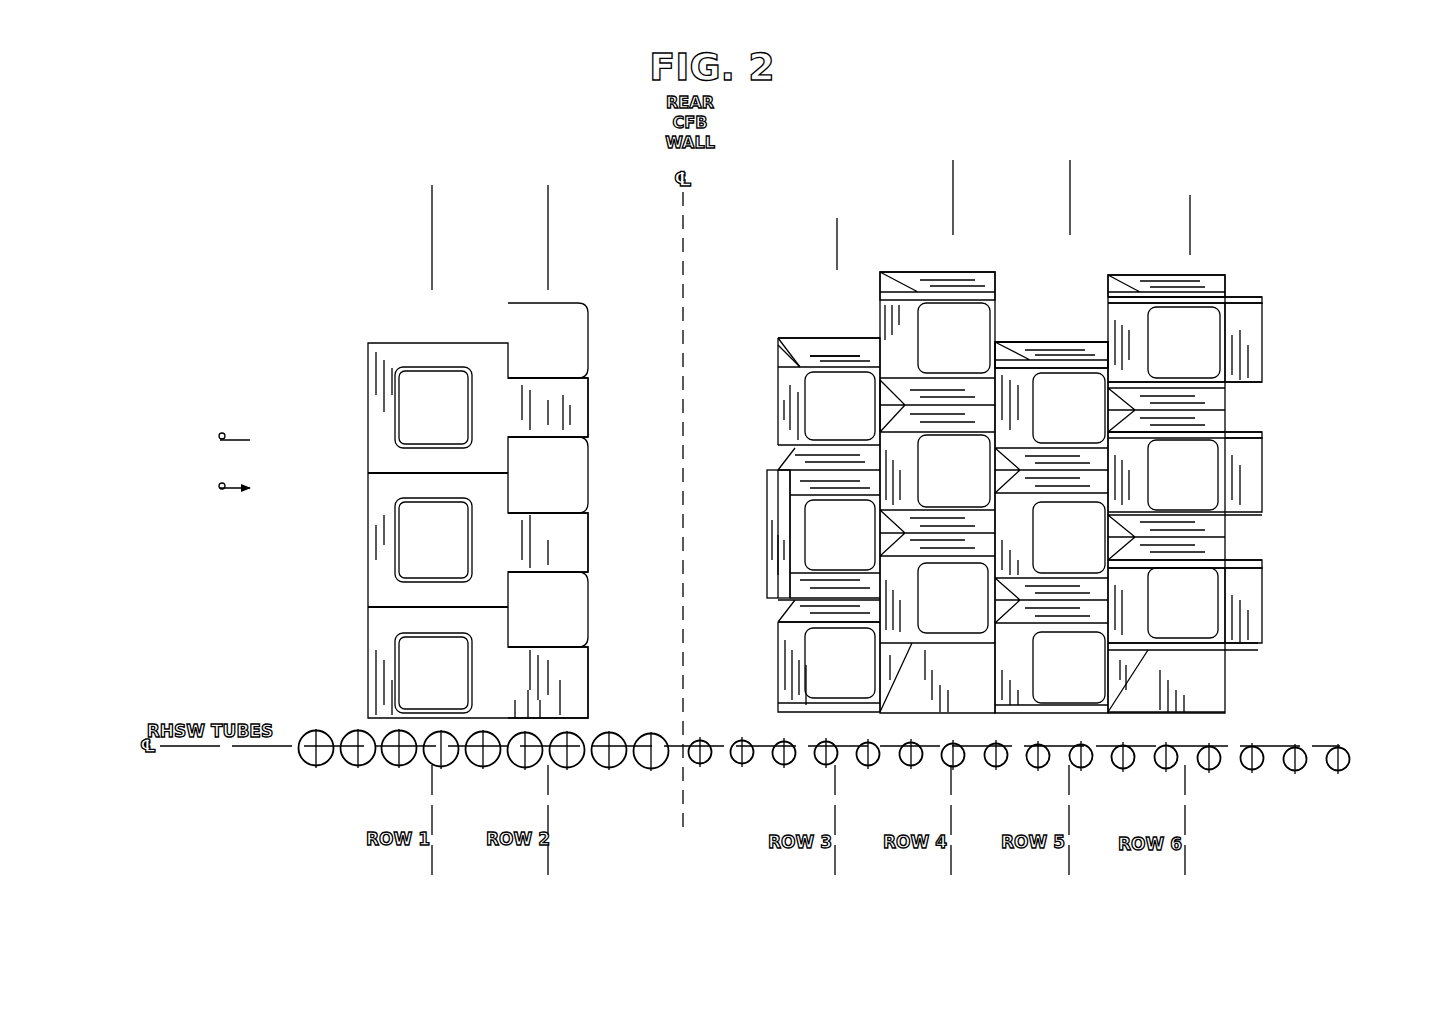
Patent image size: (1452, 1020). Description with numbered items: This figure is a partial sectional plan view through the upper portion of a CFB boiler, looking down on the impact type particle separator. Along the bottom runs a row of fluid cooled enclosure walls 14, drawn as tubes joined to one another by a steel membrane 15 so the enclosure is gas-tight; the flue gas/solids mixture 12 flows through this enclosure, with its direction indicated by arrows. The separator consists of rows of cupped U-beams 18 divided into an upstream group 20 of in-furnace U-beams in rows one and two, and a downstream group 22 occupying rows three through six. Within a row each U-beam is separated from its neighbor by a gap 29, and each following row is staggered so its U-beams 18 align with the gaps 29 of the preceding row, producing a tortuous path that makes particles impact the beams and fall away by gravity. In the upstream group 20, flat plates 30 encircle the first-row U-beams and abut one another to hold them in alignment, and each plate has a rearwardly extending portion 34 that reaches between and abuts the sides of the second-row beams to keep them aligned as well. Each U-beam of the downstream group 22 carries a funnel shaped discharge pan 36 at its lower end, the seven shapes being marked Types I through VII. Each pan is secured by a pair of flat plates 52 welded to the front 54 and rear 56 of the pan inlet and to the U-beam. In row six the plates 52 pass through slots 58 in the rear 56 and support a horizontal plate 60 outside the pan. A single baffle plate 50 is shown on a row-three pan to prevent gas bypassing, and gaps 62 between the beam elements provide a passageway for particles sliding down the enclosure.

The flue gas/solids mixture 12 is at (185, 450).
The fluid cooled enclosure walls 14 is at (322, 767).
The steel membrane 15 is at (372, 760).
The U-beams 18 is at (450, 378).
The upstream group 20 is at (416, 278).
The downstream group 22 is at (1125, 208).
The gap 29 is at (398, 462).
The flat plates 30 is at (376, 355).
The rearwardly extending portion 34 is at (583, 408).
The funnel shaped discharge pan 36 is at (822, 340).
The baffle plate 50 is at (768, 590).
The flat rectangular stainless steel plates 52 is at (778, 345).
The front 54 is at (776, 388).
The rear 56 is at (868, 385).
The slots 58 is at (1238, 298).
The horizontal plate 60 is at (1255, 345).
The gaps 62 is at (1285, 378).